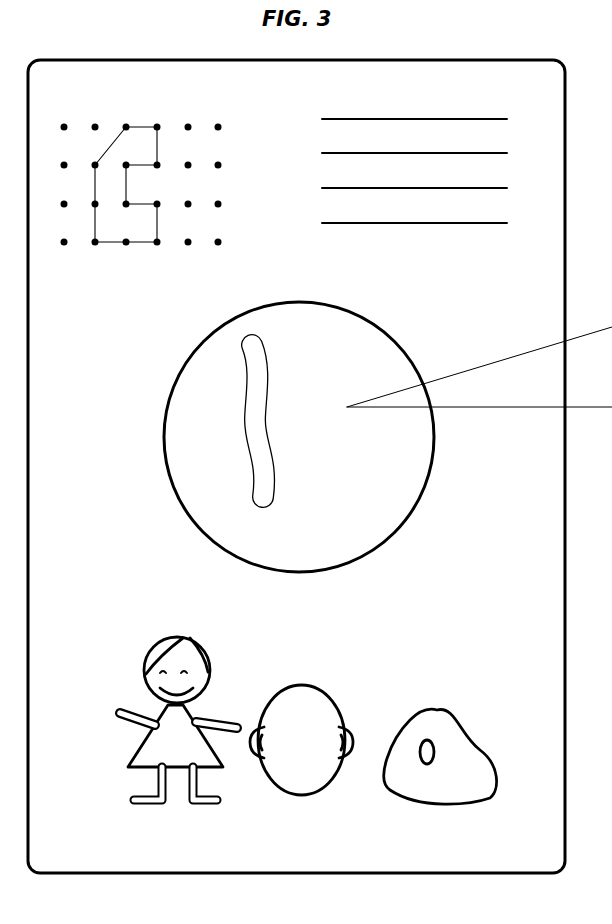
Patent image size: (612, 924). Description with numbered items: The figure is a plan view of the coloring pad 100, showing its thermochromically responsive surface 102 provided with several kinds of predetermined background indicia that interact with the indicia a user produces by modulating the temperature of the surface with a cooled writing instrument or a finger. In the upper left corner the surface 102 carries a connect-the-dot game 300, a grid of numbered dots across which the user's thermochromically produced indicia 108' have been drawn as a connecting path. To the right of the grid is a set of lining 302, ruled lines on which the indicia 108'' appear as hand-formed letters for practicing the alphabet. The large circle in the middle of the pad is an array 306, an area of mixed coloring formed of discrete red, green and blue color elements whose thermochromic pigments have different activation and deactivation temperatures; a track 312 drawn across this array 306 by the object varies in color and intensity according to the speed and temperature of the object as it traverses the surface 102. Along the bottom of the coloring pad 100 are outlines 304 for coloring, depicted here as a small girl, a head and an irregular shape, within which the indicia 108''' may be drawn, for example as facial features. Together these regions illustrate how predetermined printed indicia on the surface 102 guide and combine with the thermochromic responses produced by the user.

The coloring pad 100 is at (193, 57).
The thermochromically responsive surface 102 is at (388, 631).
The connect-the-dot game 300 is at (232, 113).
The indicia 108' is at (117, 156).
The lining 302 is at (312, 117).
The indicia 108'' is at (408, 158).
The array 306 is at (188, 358).
The track 312 is at (262, 362).
The indicia 108''' is at (158, 718).
The outlines 304 is at (288, 740).